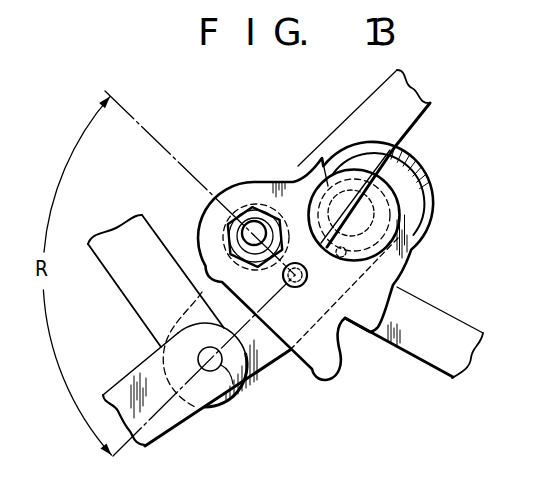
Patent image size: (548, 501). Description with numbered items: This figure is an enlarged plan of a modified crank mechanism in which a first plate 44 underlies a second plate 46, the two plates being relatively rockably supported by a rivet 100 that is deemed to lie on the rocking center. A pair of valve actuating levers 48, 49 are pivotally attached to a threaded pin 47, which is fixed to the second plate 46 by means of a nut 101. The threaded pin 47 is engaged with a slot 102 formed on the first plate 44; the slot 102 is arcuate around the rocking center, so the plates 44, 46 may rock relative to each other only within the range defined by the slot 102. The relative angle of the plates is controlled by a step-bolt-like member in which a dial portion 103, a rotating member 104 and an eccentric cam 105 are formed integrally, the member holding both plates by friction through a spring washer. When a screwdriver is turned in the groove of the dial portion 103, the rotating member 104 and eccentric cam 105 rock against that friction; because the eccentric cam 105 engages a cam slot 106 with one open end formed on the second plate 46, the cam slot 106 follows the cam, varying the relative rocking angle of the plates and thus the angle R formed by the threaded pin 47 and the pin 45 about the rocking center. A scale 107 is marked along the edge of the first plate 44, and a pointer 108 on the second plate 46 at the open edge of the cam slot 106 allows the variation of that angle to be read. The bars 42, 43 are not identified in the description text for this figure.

The lever arm 42 is at (117, 283).
The lever bar 43 is at (175, 418).
The first plate 44 is at (262, 363).
The pin 45 is at (236, 395).
The second plate 46 is at (313, 380).
The threaded pin 47 is at (253, 215).
The valve actuating lever 48 is at (435, 318).
The valve actuating lever 49 is at (431, 104).
The rivet 100 is at (297, 287).
The nut 101 is at (226, 225).
The slot 102 is at (269, 205).
The dial portion 103 is at (320, 156).
The rotating member 104 is at (430, 192).
The eccentric cam 105 is at (410, 241).
The cam slot 106 is at (380, 261).
The scale 107 is at (424, 169).
The pointer 108 is at (401, 157).